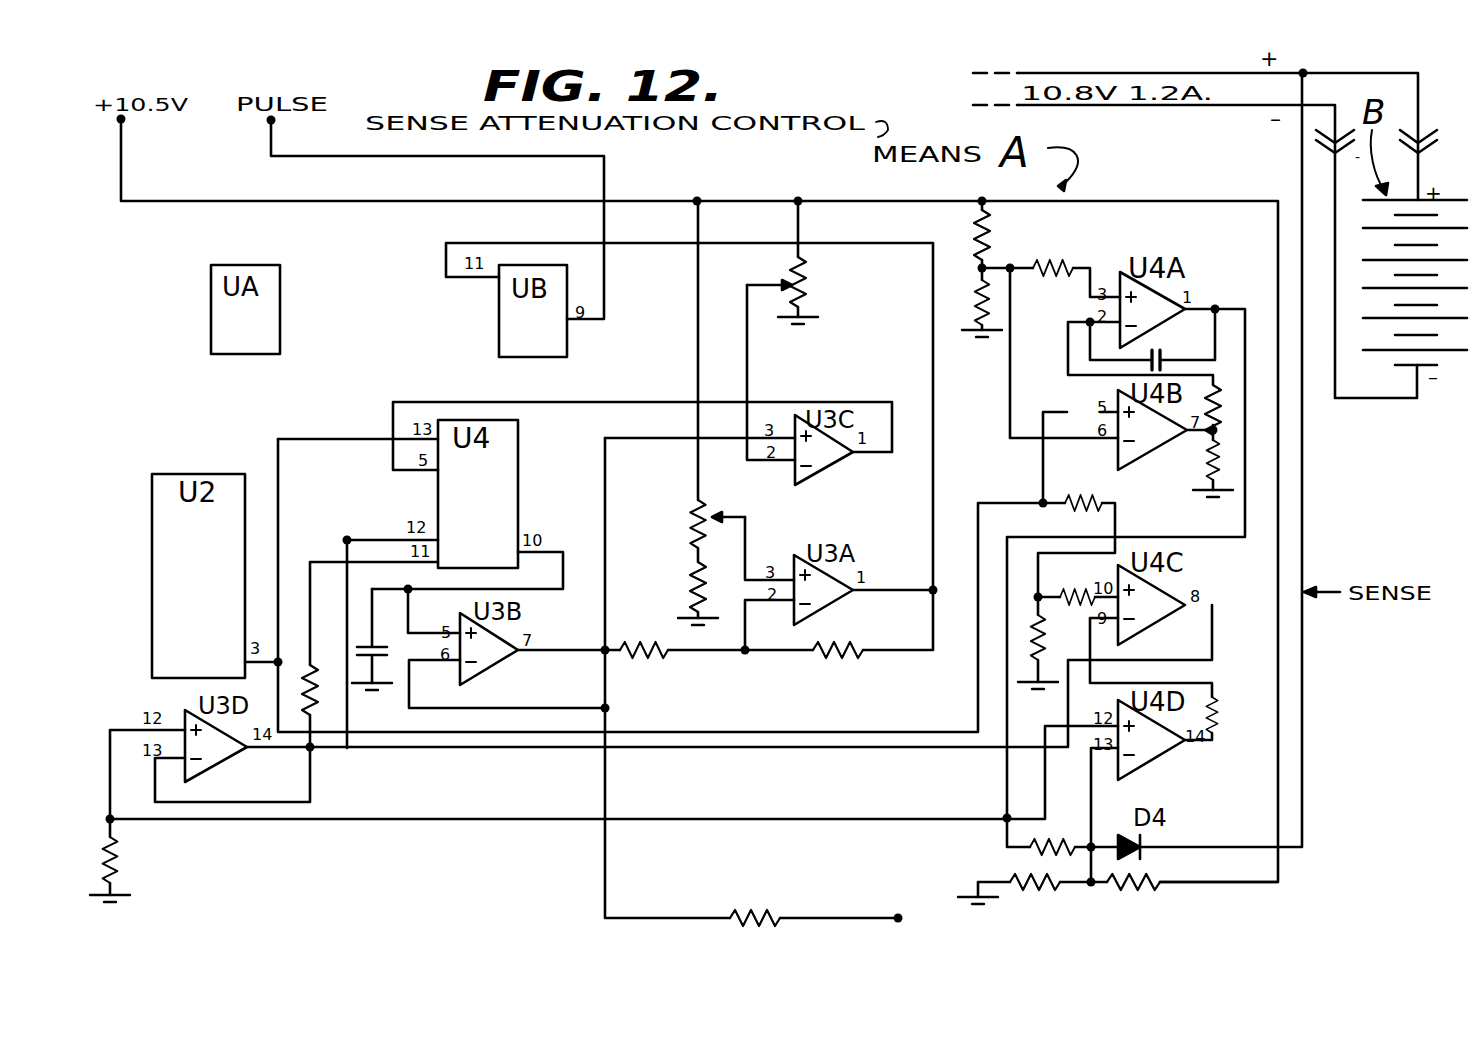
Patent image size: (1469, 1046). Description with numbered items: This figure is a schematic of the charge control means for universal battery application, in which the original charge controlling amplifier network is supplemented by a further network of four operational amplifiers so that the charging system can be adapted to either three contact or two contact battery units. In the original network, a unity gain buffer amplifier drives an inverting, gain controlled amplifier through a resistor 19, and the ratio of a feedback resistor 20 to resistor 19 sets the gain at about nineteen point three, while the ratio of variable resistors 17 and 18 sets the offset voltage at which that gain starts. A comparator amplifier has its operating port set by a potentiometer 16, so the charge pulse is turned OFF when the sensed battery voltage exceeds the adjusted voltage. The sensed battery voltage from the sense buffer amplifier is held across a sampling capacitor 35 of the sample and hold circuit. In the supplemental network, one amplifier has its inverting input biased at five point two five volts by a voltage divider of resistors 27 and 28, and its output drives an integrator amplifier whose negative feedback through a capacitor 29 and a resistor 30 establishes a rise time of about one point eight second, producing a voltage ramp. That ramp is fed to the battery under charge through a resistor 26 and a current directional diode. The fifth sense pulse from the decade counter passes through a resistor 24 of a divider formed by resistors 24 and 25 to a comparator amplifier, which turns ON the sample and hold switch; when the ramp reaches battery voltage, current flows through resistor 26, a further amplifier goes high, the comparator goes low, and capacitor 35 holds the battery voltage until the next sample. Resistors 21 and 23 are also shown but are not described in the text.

The potentiometer 16 is at (795, 261).
The variable resistor 17 is at (700, 380).
The variable resistor 18 is at (686, 593).
The resistor 19 is at (644, 667).
The resistor 20 is at (838, 667).
The resistor 21 is at (324, 706).
The resistor 23 is at (122, 860).
The resistor 24 is at (1065, 583).
The resistor 25 is at (1048, 643).
The resistor 26 is at (1059, 837).
The resistor 27 is at (999, 233).
The resistor 28 is at (969, 301).
The capacitor 29 is at (1175, 351).
The resistor 30 is at (1027, 257).
The sampling capacitor 35 is at (377, 639).